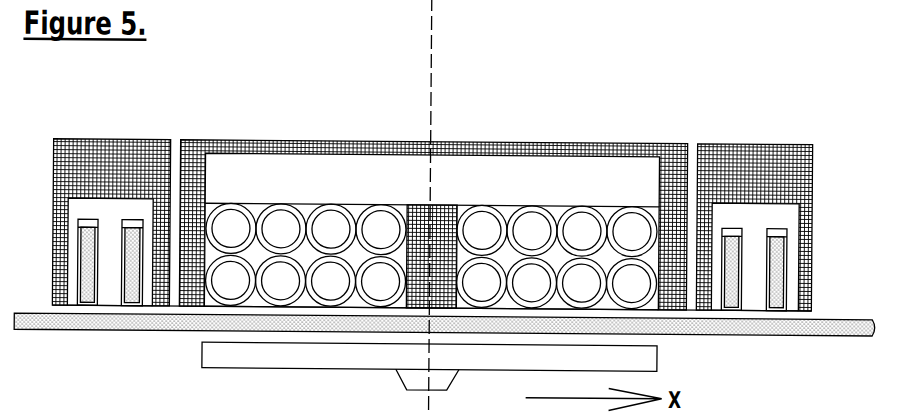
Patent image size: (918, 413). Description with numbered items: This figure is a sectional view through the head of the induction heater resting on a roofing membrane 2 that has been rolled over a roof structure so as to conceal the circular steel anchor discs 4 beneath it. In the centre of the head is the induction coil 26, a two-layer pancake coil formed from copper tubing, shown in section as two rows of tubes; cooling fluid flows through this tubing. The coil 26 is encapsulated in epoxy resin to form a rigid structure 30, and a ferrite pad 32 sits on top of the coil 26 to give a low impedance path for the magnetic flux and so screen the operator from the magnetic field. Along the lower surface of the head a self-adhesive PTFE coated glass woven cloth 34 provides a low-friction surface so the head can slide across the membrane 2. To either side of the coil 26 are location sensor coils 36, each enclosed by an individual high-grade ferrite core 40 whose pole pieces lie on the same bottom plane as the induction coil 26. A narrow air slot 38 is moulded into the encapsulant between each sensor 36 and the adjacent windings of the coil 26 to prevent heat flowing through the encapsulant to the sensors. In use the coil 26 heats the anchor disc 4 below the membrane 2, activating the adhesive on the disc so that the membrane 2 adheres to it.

The membrane 2 is at (848, 336).
The anchor disc 4 is at (203, 363).
The induction coil 26 is at (342, 228).
The rigid structure 30 is at (736, 141).
The ferrite pad 32 is at (316, 174).
The PTFE coated glass woven cloth 34 is at (63, 310).
The location sensor coil 36 is at (84, 269).
The air slot 38 is at (172, 141).
The ferrite core 40 is at (107, 217).